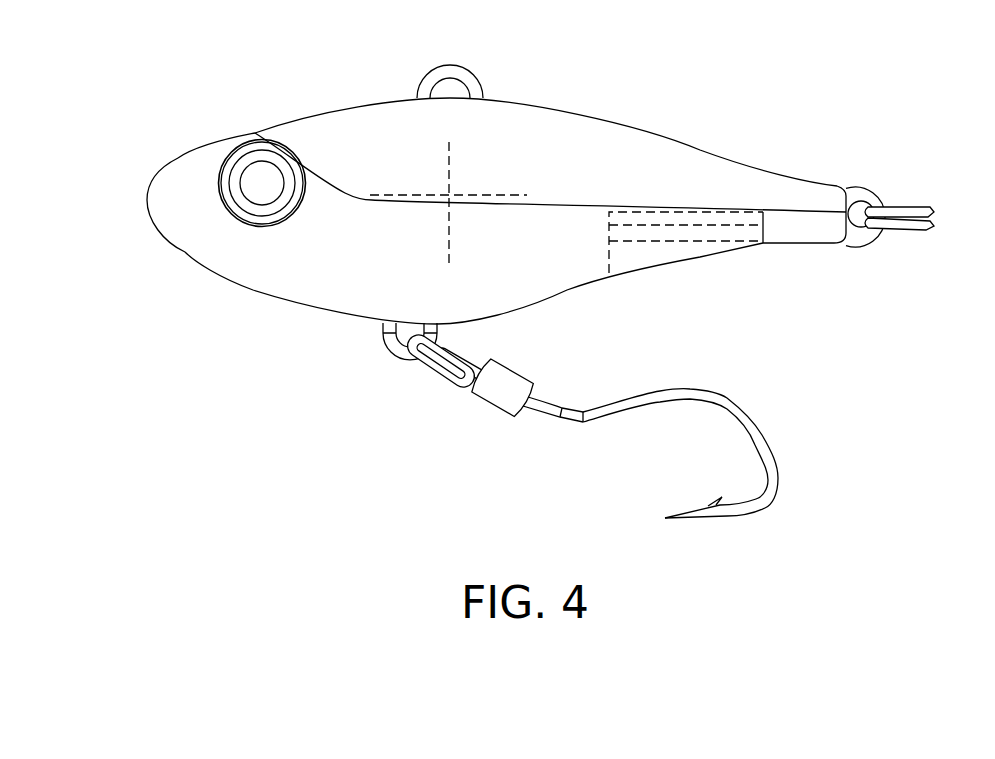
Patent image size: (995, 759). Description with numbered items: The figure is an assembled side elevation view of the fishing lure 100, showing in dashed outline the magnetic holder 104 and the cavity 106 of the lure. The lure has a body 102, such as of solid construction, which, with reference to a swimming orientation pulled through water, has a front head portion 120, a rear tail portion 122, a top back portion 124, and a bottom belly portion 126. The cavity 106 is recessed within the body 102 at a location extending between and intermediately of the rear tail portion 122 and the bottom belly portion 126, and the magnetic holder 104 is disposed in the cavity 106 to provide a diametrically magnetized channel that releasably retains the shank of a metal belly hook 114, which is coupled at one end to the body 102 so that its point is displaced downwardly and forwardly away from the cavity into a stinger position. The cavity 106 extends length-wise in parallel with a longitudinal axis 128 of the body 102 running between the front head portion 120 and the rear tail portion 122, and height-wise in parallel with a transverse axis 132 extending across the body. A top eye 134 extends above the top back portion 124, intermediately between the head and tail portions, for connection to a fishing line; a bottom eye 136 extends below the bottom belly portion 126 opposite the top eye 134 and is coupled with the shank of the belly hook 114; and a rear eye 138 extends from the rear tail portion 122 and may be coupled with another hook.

The fishing lure 100 is at (663, 93).
The body 102 is at (267, 295).
The magnetic holder 104 is at (702, 247).
The cavity 106 is at (627, 253).
The metal belly hook 114 is at (728, 402).
The front head portion 120 is at (148, 192).
The rear tail portion 122 is at (825, 190).
The top back portion 124 is at (498, 107).
The bottom belly portion 126 is at (390, 310).
The longitudinal axis 128 is at (477, 197).
The transverse axis 132 is at (447, 230).
The top eye 134 is at (440, 65).
The bottom eye 136 is at (408, 362).
The rear eye 138 is at (883, 193).